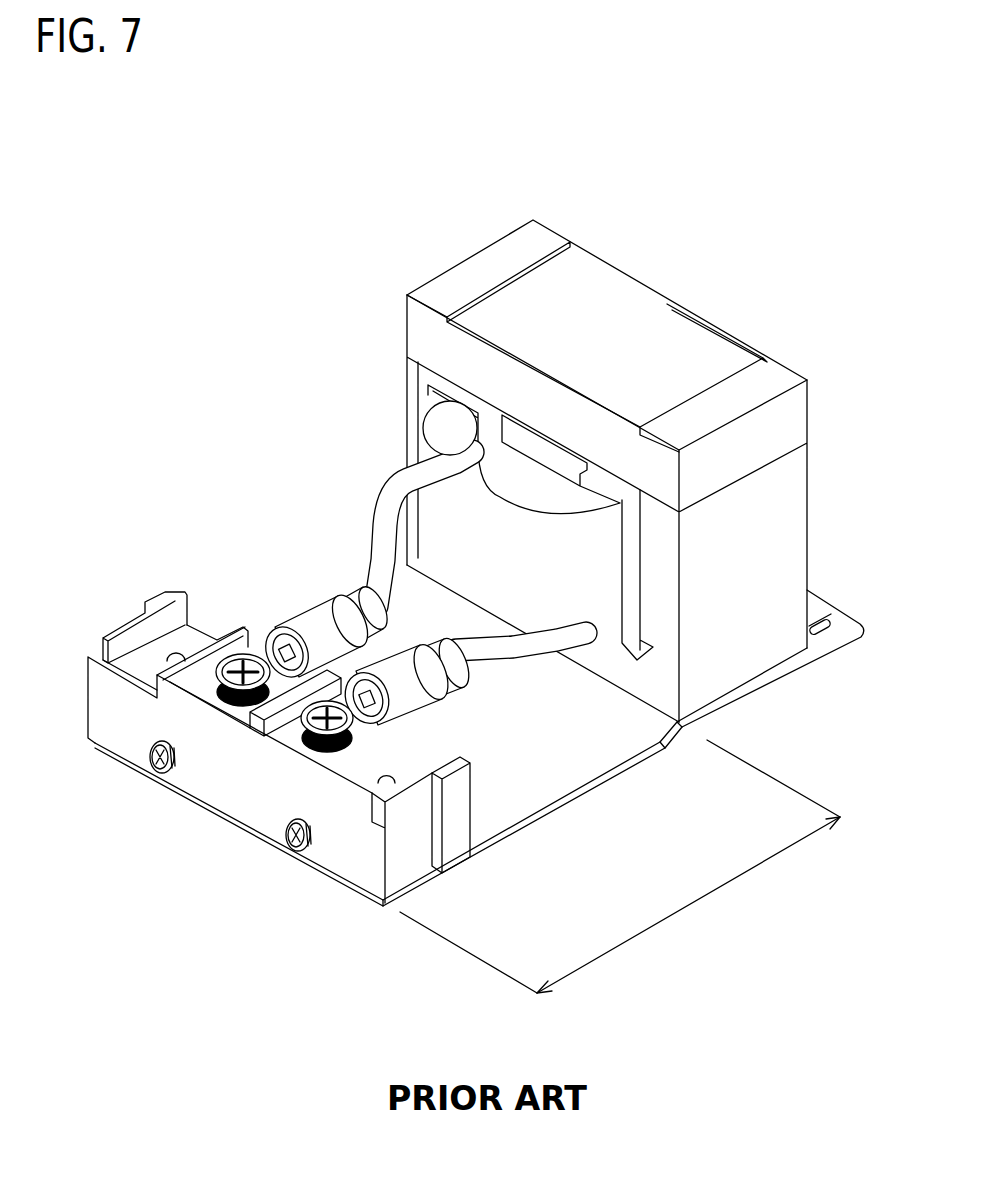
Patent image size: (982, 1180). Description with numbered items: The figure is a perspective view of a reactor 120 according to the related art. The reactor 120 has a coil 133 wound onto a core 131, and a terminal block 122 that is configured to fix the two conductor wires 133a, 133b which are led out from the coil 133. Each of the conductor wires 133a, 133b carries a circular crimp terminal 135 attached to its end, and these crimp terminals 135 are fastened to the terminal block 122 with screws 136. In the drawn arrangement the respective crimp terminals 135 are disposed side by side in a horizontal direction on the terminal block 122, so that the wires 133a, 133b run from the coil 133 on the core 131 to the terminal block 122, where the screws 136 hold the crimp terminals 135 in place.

The reactor 120 is at (377, 218).
The terminal block 122 is at (98, 697).
The core 131 is at (535, 457).
The coil 133 is at (430, 414).
The conductor wire 133a is at (557, 640).
The conductor wire 133b is at (383, 505).
The crimp terminal 135 is at (207, 677).
The screw 136 is at (228, 660).